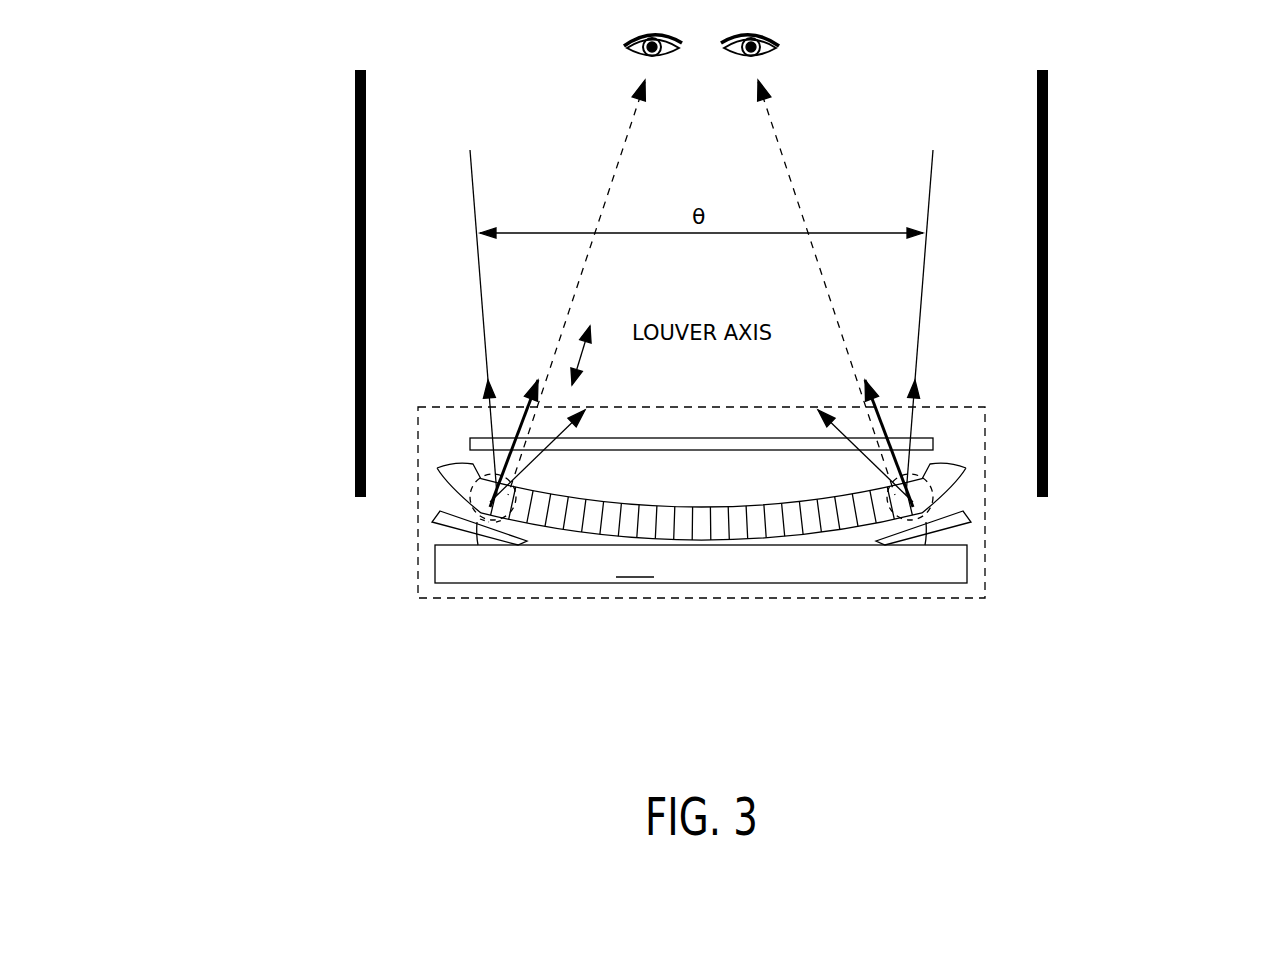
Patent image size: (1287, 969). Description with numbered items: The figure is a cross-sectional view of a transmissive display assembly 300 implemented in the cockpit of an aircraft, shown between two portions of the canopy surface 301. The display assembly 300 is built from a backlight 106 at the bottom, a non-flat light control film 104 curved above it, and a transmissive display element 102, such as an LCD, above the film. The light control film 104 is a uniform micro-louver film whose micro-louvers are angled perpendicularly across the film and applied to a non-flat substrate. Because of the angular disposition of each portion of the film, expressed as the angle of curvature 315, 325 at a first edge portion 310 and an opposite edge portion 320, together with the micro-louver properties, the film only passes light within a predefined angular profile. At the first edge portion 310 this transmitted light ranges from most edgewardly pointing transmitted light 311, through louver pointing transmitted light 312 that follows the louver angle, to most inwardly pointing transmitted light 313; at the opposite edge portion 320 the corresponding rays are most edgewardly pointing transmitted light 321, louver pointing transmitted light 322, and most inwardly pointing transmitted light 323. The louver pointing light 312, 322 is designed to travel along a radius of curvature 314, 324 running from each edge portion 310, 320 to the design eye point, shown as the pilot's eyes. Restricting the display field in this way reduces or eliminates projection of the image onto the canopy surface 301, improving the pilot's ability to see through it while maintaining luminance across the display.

The transmissive display assembly 300 is at (985, 500).
The canopy surface 301 is at (355, 292).
The transmissive display element 102 is at (701, 451).
The non-flat light control film 104 is at (457, 506).
The backlight 106 is at (701, 564).
The first non-flat light control film edge portion 310 is at (437, 468).
The opposite non-flat light control film edge portion 320 is at (966, 468).
The most edgewardly pointing transmitted light 311 is at (485, 423).
The most edgewardly pointing transmitted light 321 is at (918, 423).
The louver pointing transmitted light 312 is at (523, 423).
The louver pointing transmitted light 322 is at (880, 423).
The most inwardly pointing transmitted light 313 is at (537, 458).
The most inwardly pointing transmitted light 323 is at (866, 458).
The radius of curvature 314 is at (617, 168).
The radius of curvature 324 is at (786, 168).
The angle of curvature 315 is at (440, 522).
The angle of curvature 325 is at (963, 522).